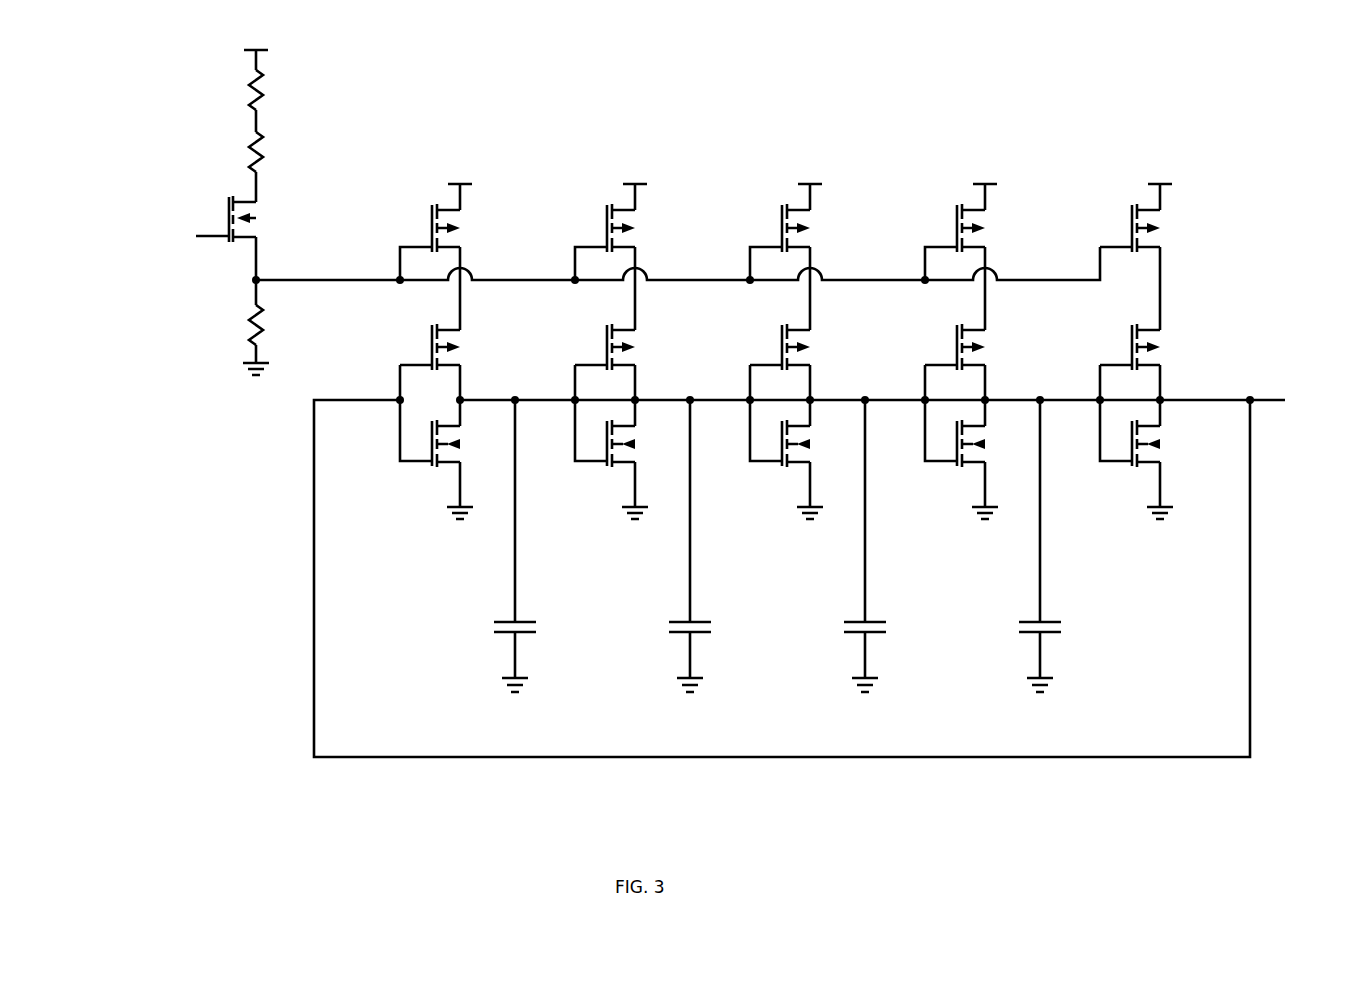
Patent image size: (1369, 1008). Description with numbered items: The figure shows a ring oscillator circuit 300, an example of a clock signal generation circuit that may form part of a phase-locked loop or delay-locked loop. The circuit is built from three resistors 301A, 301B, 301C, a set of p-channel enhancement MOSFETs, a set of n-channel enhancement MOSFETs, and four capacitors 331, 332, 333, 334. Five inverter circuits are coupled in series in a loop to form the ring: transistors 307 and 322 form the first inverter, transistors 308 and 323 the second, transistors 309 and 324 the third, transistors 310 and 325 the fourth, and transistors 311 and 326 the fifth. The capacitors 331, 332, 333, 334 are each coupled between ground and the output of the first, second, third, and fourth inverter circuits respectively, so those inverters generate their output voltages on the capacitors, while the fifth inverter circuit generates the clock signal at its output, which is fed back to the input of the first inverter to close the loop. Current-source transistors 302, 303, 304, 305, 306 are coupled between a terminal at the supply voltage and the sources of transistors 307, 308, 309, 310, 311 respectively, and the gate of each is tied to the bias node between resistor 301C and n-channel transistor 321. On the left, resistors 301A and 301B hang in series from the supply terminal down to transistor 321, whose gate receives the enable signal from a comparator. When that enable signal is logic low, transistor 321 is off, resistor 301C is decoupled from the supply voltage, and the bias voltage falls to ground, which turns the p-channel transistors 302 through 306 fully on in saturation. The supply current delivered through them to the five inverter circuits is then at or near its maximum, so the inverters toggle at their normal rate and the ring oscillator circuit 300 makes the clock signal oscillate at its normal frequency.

The ring oscillator circuit 300 is at (145, 108).
The resistor 301A is at (248, 88).
The resistor 301B is at (248, 150).
The resistor 301C is at (250, 320).
The n-channel transistor 321 is at (228, 210).
The p-channel transistor 302 is at (430, 221).
The p-channel transistor 303 is at (605, 221).
The p-channel transistor 304 is at (780, 221).
The p-channel transistor 305 is at (955, 221).
The p-channel transistor 306 is at (1130, 221).
The p-channel transistor 307 is at (430, 339).
The p-channel transistor 308 is at (605, 339).
The p-channel transistor 309 is at (780, 339).
The p-channel transistor 310 is at (955, 339).
The p-channel transistor 311 is at (1130, 339).
The n-channel transistor 322 is at (433, 464).
The n-channel transistor 323 is at (608, 464).
The n-channel transistor 324 is at (783, 464).
The n-channel transistor 325 is at (958, 464).
The n-channel transistor 326 is at (1133, 464).
The capacitor 331 is at (510, 620).
The capacitor 332 is at (685, 620).
The capacitor 333 is at (860, 620).
The capacitor 334 is at (1035, 620).